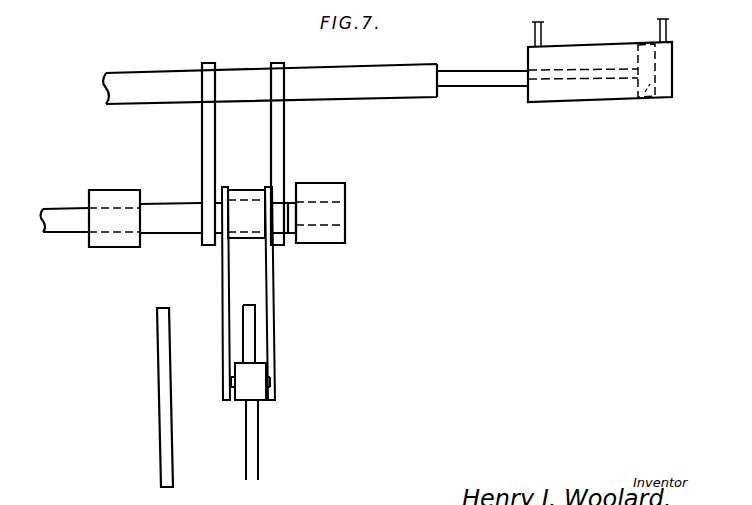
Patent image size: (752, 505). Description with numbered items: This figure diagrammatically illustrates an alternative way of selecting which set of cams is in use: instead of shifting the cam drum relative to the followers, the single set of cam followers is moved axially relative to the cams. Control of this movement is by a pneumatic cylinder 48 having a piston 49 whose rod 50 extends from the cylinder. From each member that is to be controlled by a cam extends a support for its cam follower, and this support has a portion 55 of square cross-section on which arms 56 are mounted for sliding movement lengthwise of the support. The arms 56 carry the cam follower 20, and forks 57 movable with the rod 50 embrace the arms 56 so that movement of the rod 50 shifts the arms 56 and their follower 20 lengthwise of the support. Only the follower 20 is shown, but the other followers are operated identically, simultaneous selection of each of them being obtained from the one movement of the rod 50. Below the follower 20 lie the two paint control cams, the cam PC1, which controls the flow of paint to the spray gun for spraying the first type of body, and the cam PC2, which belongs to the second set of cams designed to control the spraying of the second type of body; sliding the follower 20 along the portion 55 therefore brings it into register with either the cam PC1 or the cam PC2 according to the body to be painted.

The pneumatic cylinder 48 is at (577, 44).
The piston 49 is at (637, 102).
The rod 50 is at (468, 77).
The portion of square cross-section 55 is at (177, 215).
The arms 56 is at (265, 273).
The forks 57 is at (271, 143).
The cam follower 20 is at (253, 390).
The cam PC1 is at (172, 468).
The cam PC2 is at (258, 465).